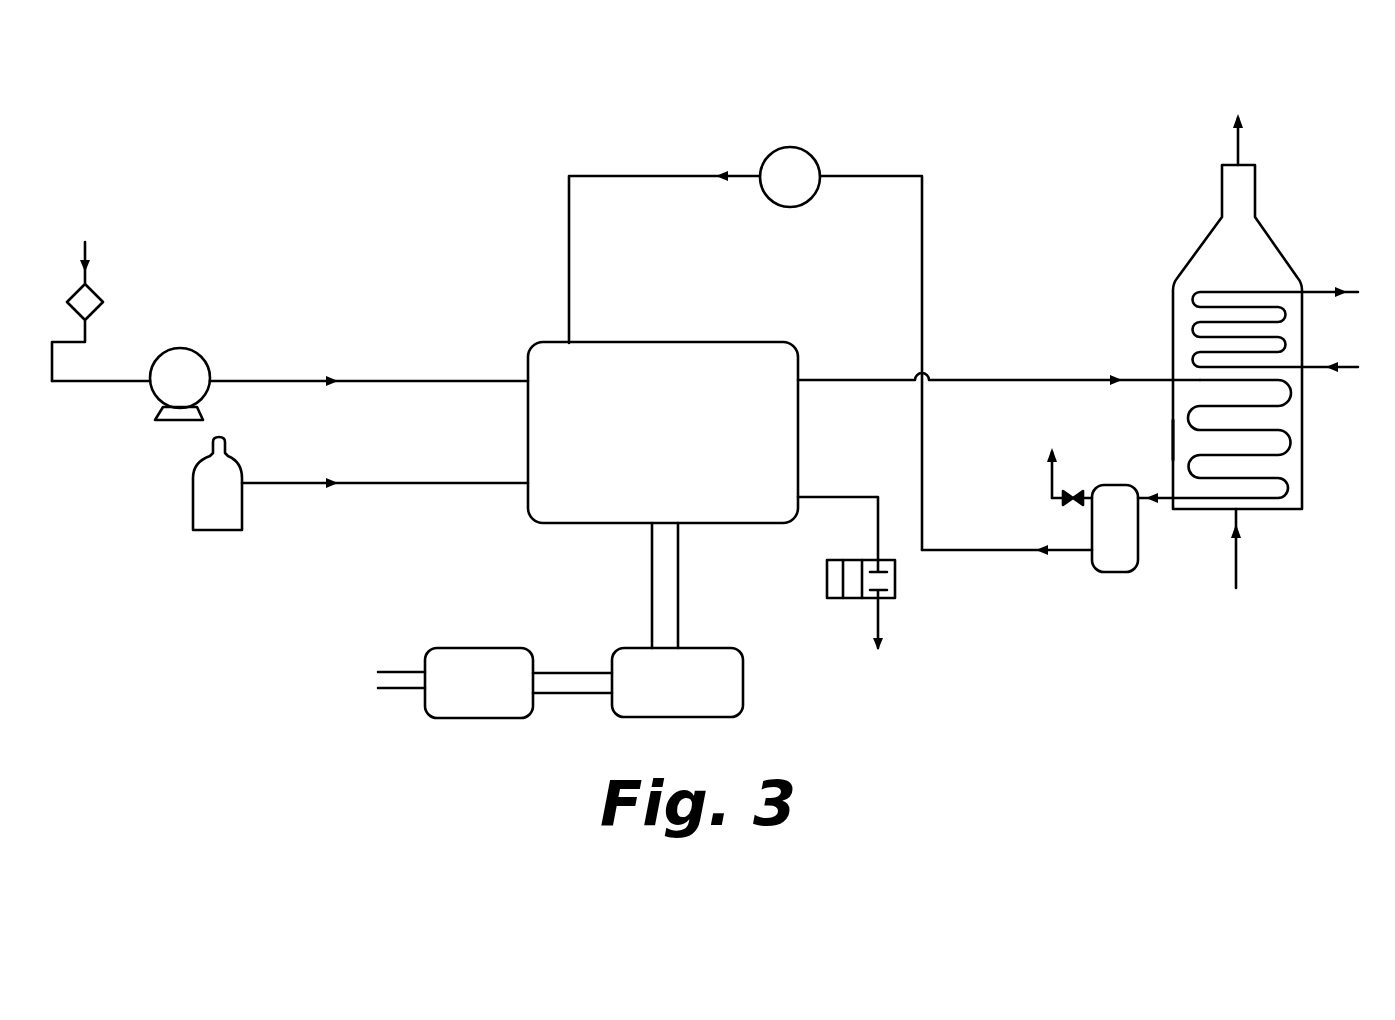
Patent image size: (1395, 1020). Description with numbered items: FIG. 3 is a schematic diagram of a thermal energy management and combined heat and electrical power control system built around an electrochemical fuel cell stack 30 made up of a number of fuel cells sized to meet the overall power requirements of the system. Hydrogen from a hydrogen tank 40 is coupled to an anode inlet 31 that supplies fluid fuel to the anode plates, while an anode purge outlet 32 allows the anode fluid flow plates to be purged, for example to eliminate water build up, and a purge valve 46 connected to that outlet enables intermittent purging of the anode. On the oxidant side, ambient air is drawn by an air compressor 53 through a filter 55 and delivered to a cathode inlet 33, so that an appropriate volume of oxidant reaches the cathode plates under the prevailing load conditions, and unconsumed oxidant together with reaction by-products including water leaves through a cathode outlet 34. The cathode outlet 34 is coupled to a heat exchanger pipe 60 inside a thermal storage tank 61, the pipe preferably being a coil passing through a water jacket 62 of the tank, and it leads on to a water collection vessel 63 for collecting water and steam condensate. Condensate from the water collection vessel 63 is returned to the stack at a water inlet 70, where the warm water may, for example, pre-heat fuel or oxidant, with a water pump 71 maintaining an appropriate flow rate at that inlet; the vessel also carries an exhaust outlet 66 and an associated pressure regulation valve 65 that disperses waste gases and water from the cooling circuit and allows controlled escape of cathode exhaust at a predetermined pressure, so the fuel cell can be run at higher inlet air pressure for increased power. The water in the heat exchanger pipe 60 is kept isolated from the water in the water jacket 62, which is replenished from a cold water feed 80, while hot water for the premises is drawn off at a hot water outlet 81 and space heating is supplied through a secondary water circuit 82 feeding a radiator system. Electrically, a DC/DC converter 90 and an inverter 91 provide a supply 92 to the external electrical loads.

The fuel cell stack 30 is at (677, 343).
The anode inlet 31 is at (503, 486).
The anode purge outlet 32 is at (817, 500).
The cathode inlet 33 is at (508, 386).
The cathode outlet 34 is at (823, 376).
The hydrogen tank 40 is at (201, 494).
The purge valve 46 is at (827, 582).
The air compressor 53 is at (190, 358).
The filter 55 is at (79, 295).
The heat exchanger pipe 60 is at (1279, 393).
The thermal storage tank 61 is at (1173, 288).
The water jacket 62 is at (1183, 438).
The water collection vessel 63 is at (1139, 548).
The pressure regulation valve 65 is at (1072, 506).
The exhaust outlet 66 is at (1050, 475).
The water inlet 70 is at (570, 308).
The water pump 71 is at (803, 158).
The cold water feed 80 is at (1237, 565).
The hot water outlet 81 is at (1238, 147).
The secondary water circuit 82 is at (1303, 283).
The DC/DC converter 90 is at (628, 648).
The inverter 91 is at (443, 648).
The supply 92 is at (388, 692).